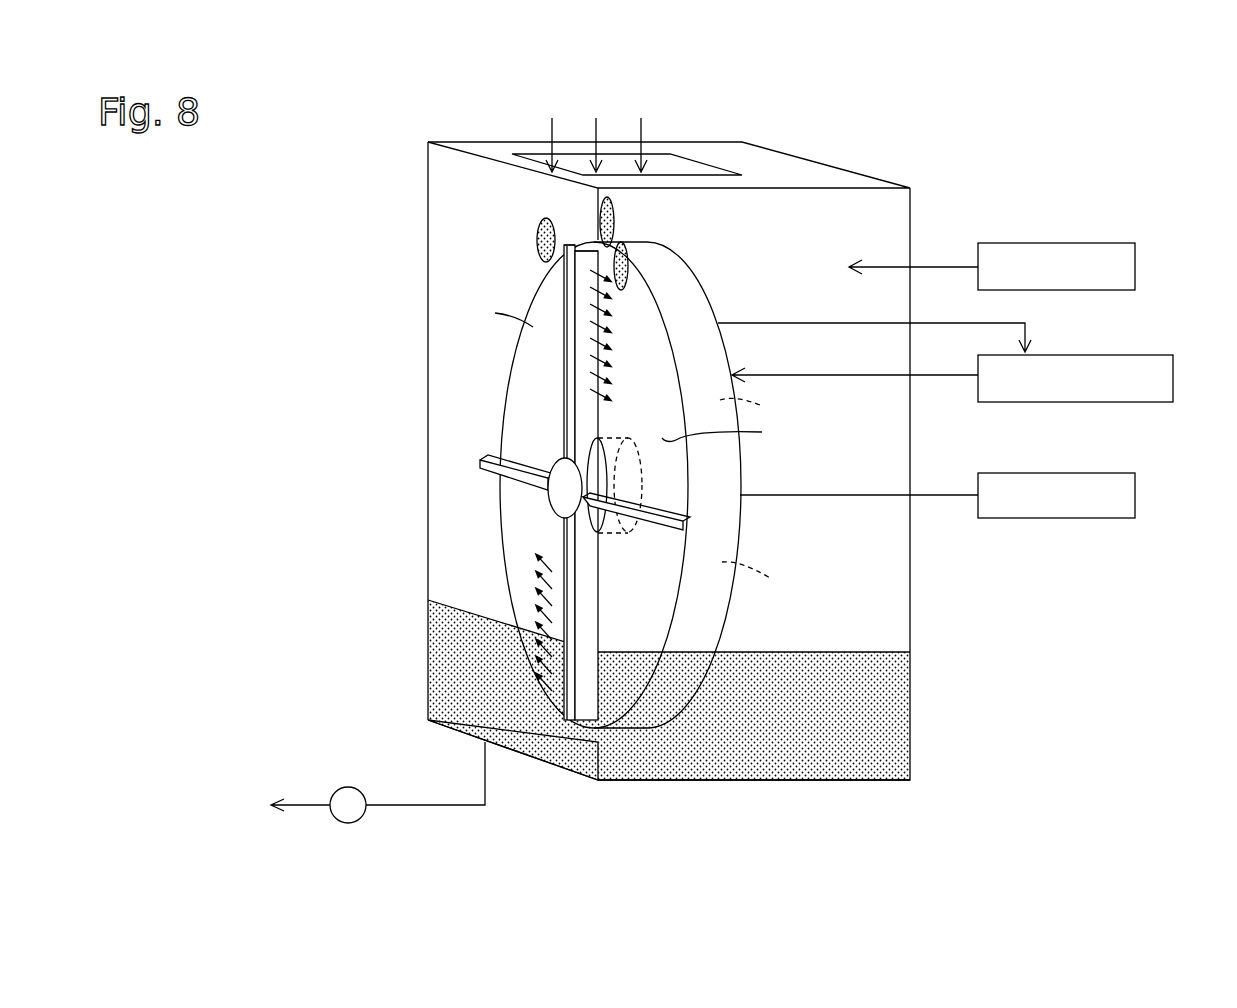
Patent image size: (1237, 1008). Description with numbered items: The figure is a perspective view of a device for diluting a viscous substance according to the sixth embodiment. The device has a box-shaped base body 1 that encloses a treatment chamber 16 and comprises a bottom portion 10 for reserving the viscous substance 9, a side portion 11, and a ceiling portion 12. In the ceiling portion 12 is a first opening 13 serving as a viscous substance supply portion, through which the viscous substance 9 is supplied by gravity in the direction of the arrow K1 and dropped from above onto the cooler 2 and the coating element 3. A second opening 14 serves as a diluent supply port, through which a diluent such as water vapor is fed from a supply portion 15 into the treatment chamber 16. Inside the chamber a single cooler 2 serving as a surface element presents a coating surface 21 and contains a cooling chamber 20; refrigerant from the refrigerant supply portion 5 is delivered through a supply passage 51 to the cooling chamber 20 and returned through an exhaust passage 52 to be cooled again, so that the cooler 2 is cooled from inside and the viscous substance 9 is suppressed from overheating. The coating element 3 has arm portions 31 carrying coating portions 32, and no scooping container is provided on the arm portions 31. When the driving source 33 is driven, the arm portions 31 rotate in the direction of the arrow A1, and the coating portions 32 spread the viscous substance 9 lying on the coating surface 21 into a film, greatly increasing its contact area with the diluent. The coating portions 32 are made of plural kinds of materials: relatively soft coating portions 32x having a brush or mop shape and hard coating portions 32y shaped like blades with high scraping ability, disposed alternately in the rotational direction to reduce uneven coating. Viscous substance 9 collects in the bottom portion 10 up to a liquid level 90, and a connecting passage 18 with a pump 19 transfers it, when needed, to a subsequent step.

The base body 1 is at (914, 552).
The cooler 2 is at (677, 488).
The coating element 3 is at (486, 451).
The refrigerant supply portion 5 is at (1175, 375).
The viscous substance 9 is at (528, 225).
The bottom portion 10 is at (468, 742).
The side portion 11 is at (428, 680).
The ceiling portion 12 is at (772, 162).
The first opening 13 is at (683, 168).
The second opening 14 is at (913, 262).
The supply portion 15 is at (1137, 262).
The treatment chamber 16 is at (880, 222).
The connecting passage 18 is at (432, 808).
The pump 19 is at (349, 824).
The cooling chamber 20 is at (759, 495).
The coating surface 21 is at (630, 373).
The arm portion 31 is at (563, 393).
The coating portion 32 is at (583, 335).
The soft coating portion 32x is at (582, 335).
The hard coating portion 32y is at (482, 470).
The driving source 33 is at (1137, 497).
The supply passage 51 is at (932, 377).
The exhaust passage 52 is at (925, 321).
The liquid level 90 is at (840, 652).
The arrow A1 is at (597, 382).
The arrow K1 is at (643, 133).